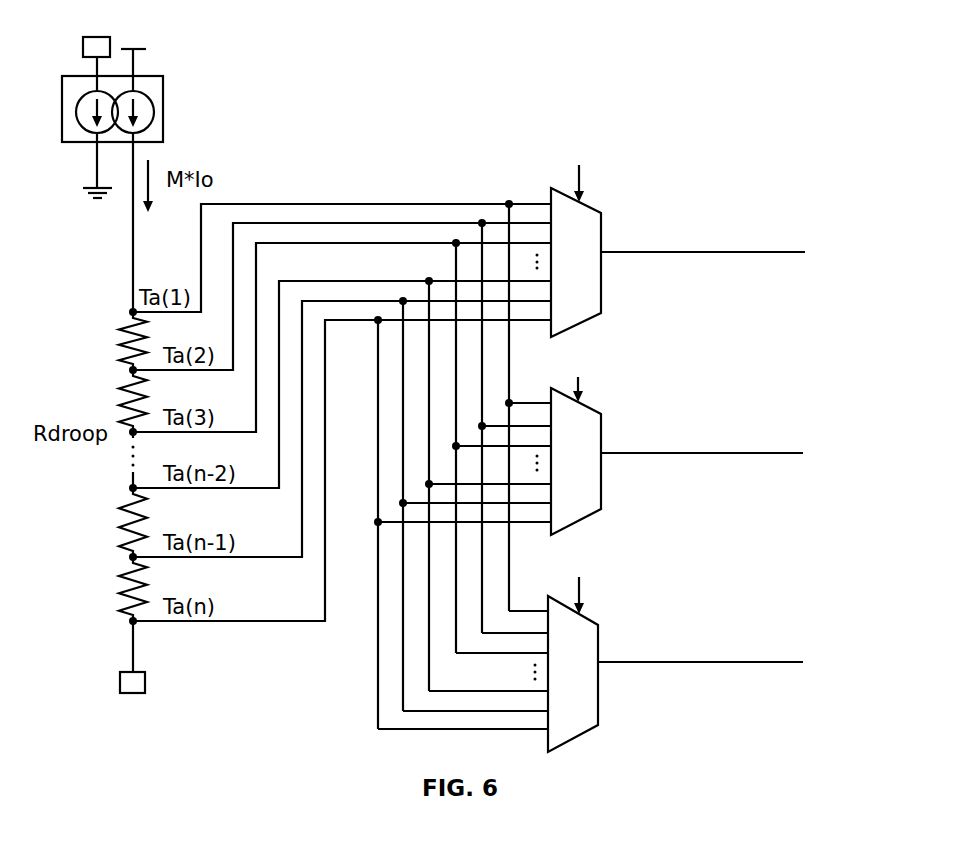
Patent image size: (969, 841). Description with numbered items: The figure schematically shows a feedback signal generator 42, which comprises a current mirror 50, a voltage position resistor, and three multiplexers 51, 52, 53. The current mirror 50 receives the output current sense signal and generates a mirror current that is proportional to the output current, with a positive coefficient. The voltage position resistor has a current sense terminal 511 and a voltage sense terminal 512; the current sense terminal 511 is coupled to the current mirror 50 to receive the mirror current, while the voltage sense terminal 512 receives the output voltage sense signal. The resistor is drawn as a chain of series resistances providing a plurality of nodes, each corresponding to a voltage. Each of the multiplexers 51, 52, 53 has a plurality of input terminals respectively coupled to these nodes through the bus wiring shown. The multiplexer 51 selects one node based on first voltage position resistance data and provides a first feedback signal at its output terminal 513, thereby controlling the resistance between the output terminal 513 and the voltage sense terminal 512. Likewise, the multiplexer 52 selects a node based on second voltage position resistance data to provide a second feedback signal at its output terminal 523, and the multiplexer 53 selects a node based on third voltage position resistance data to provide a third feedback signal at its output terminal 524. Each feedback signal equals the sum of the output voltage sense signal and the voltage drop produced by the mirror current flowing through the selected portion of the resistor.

The feedback signal generator 42 is at (717, 150).
The current mirror 50 is at (163, 111).
The multiplexer 51 is at (601, 232).
The multiplexer 52 is at (601, 430).
The multiplexer 53 is at (598, 637).
The current sense terminal 511 is at (133, 268).
The voltage sense terminal 512 is at (133, 648).
The output terminal 513 is at (688, 252).
The output terminal 523 is at (702, 453).
The output terminal 524 is at (702, 662).